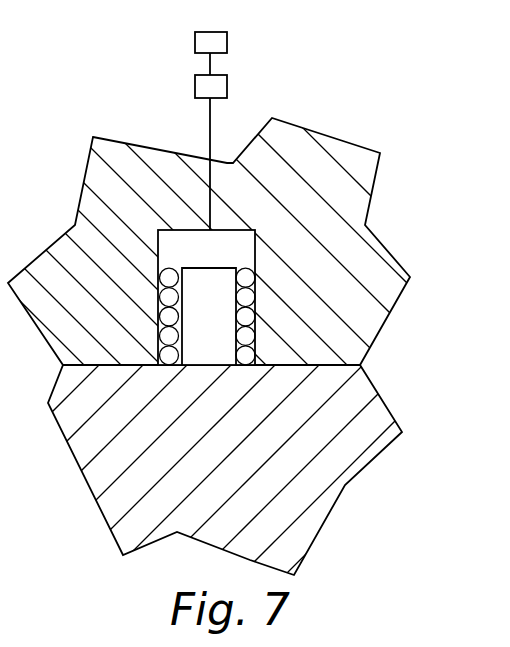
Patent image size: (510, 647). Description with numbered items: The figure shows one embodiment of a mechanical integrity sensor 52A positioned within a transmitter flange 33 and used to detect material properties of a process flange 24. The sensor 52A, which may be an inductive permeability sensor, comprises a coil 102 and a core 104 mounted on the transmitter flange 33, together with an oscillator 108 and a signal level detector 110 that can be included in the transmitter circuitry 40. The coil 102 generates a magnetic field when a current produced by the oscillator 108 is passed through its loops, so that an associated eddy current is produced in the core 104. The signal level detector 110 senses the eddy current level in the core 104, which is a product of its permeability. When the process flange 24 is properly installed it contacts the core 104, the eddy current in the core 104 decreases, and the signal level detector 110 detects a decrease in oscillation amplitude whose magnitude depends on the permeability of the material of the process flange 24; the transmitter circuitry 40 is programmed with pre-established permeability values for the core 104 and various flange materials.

The process flange 24 is at (307, 493).
The transmitter flange 33 is at (305, 148).
The transmitter circuitry 40 is at (207, 125).
The mechanical integrity sensor 52A is at (142, 273).
The coil 102 is at (240, 279).
The core 104 is at (215, 330).
The oscillator 108 is at (233, 81).
The signal level detector 110 is at (222, 40).